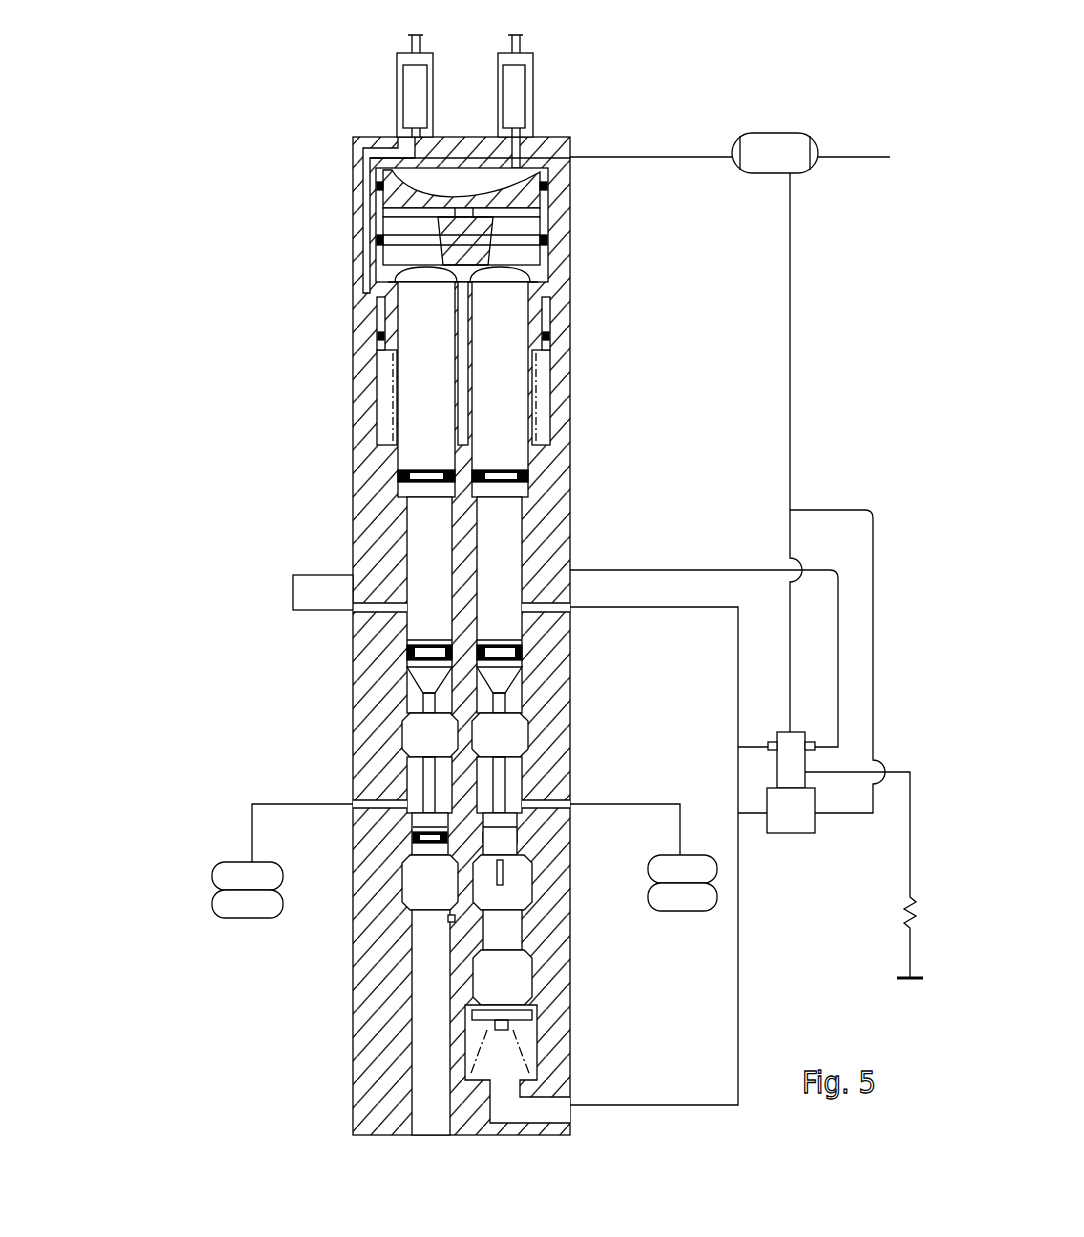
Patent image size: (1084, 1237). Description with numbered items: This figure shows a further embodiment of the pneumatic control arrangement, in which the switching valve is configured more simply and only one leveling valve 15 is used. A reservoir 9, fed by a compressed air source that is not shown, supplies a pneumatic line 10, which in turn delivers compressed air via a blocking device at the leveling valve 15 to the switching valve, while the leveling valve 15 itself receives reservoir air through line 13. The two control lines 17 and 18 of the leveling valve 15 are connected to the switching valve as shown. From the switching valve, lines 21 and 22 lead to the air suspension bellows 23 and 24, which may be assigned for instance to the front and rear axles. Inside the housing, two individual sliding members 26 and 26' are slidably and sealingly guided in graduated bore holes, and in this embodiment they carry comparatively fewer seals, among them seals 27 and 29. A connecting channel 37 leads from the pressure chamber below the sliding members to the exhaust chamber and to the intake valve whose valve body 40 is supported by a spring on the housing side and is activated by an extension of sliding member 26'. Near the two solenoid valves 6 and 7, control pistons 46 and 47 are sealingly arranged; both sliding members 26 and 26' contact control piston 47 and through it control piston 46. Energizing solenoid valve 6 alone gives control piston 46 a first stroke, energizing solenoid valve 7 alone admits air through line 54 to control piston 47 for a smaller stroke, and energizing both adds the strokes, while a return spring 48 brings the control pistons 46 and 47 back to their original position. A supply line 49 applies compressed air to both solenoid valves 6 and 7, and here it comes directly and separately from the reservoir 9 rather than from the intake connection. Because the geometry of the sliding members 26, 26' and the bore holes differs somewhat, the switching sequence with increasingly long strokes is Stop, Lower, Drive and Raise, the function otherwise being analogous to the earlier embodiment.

The solenoid valve 6 is at (493, 47).
The solenoid valve 7 is at (388, 68).
The reservoir 9 is at (750, 160).
The pneumatic line 10 is at (875, 648).
The pneumatic line 13 is at (790, 628).
The leveling valve 15 is at (777, 776).
The line 17 is at (592, 570).
The line 18 is at (624, 610).
The line 21 is at (294, 808).
The line 22 is at (620, 805).
The air suspension bellows 23 is at (250, 908).
The air suspension bellows 24 is at (683, 898).
The individual sliding member 26 is at (386, 389).
The individual sliding member 26' is at (544, 389).
The seal 27 is at (530, 840).
The seal 29 is at (528, 477).
The connecting channel 37 is at (450, 918).
The valve body 40 is at (535, 1017).
The control piston 46 is at (523, 200).
The control piston 47 is at (522, 257).
The return spring 48 is at (533, 424).
The supply line 49 is at (645, 154).
The line 54 is at (372, 209).